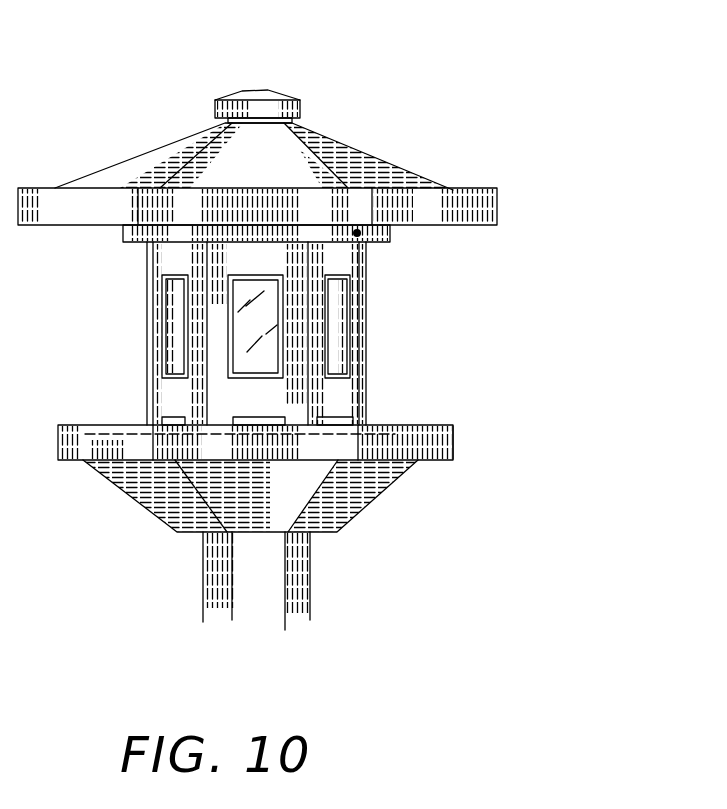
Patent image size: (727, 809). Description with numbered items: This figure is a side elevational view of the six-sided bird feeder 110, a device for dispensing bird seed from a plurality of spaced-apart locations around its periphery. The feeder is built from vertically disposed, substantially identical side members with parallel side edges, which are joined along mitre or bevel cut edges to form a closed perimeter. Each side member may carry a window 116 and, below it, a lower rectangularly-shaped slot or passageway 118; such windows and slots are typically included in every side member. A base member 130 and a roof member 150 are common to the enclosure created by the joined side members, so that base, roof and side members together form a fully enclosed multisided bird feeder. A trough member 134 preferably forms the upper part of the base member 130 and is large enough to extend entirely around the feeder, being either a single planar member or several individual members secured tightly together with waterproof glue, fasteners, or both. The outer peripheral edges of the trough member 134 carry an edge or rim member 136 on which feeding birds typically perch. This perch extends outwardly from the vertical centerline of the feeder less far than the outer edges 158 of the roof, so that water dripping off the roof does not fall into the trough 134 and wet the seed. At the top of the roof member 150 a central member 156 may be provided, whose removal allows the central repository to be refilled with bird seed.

The six-sided bird feeder 110 is at (538, 46).
The central member 156 is at (283, 93).
The roof member 150 is at (403, 167).
The outer edges of the roof 158 is at (497, 208).
The window 116 is at (273, 292).
The lower rectangularly-shaped slot or passageway 118 is at (340, 417).
The trough member 134 is at (387, 438).
The edge or rim member 136 is at (452, 450).
The base member 130 is at (364, 497).